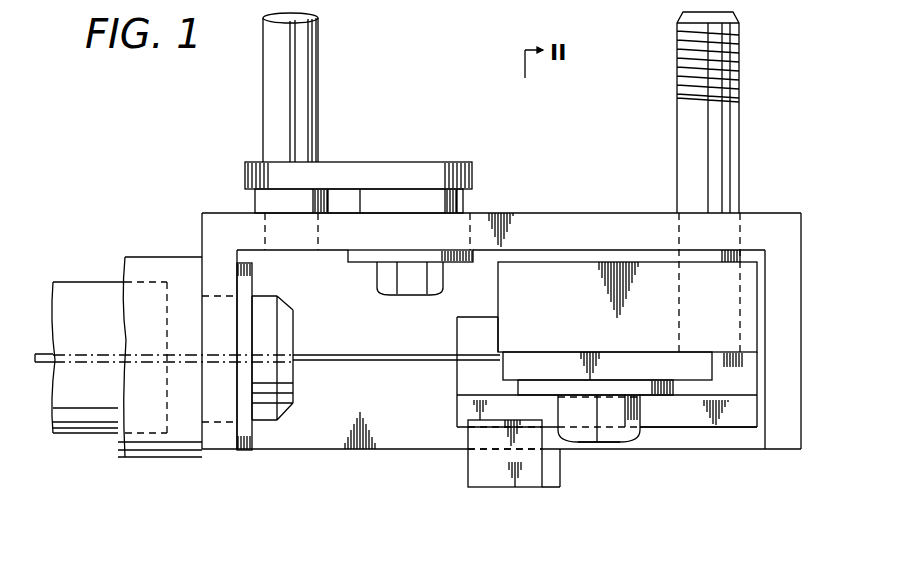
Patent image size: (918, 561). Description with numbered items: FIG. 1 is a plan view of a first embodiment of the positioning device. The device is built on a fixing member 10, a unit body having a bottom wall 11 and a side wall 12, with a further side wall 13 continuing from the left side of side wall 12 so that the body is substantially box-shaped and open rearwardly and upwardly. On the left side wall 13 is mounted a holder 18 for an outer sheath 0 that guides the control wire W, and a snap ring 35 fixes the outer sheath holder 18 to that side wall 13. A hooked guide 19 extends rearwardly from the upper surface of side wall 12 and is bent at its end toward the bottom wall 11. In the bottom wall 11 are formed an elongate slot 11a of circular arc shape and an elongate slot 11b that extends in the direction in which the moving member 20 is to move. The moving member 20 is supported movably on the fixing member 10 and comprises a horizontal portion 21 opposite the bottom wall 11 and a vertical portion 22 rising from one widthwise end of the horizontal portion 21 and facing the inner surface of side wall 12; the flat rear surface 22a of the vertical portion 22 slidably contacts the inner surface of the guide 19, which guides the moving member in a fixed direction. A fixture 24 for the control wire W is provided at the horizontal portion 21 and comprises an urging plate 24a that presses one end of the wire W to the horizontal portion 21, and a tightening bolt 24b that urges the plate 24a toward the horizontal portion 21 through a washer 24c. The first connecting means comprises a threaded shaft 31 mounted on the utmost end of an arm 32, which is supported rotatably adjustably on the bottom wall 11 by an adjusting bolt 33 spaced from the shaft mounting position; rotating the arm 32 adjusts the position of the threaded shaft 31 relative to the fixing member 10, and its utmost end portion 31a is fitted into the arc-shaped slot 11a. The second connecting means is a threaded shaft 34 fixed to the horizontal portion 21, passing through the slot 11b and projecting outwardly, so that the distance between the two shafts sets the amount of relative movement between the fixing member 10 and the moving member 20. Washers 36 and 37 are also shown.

The workpiece feeder 0 is at (85, 435).
The fixing member 10 is at (445, 452).
The bottom wall 11 is at (566, 213).
The elongate slot 11a is at (270, 228).
The elongate slot 11b is at (478, 236).
The side wall 12 is at (405, 450).
The side wall 13 is at (215, 452).
The holder 18 is at (150, 458).
The hooked guide 19 is at (510, 445).
The moving member 20 is at (687, 428).
The horizontal portion 21 is at (780, 291).
The vertical portion 22 is at (752, 375).
The rear surface 22a is at (740, 422).
The fixture 24 is at (590, 443).
The urging plate 24a is at (703, 362).
The tightening bolt 24b is at (618, 438).
The washer 24c is at (655, 396).
The threaded shaft 31 is at (318, 70).
The utmost end portion 31a is at (290, 246).
The arm 32 is at (352, 165).
The adjusting bolt 33 is at (415, 296).
The threaded shaft 34 is at (739, 128).
The snap ring 35 is at (244, 452).
The washer 36 is at (397, 195).
The washer 37 is at (366, 262).
The control wire W is at (325, 362).